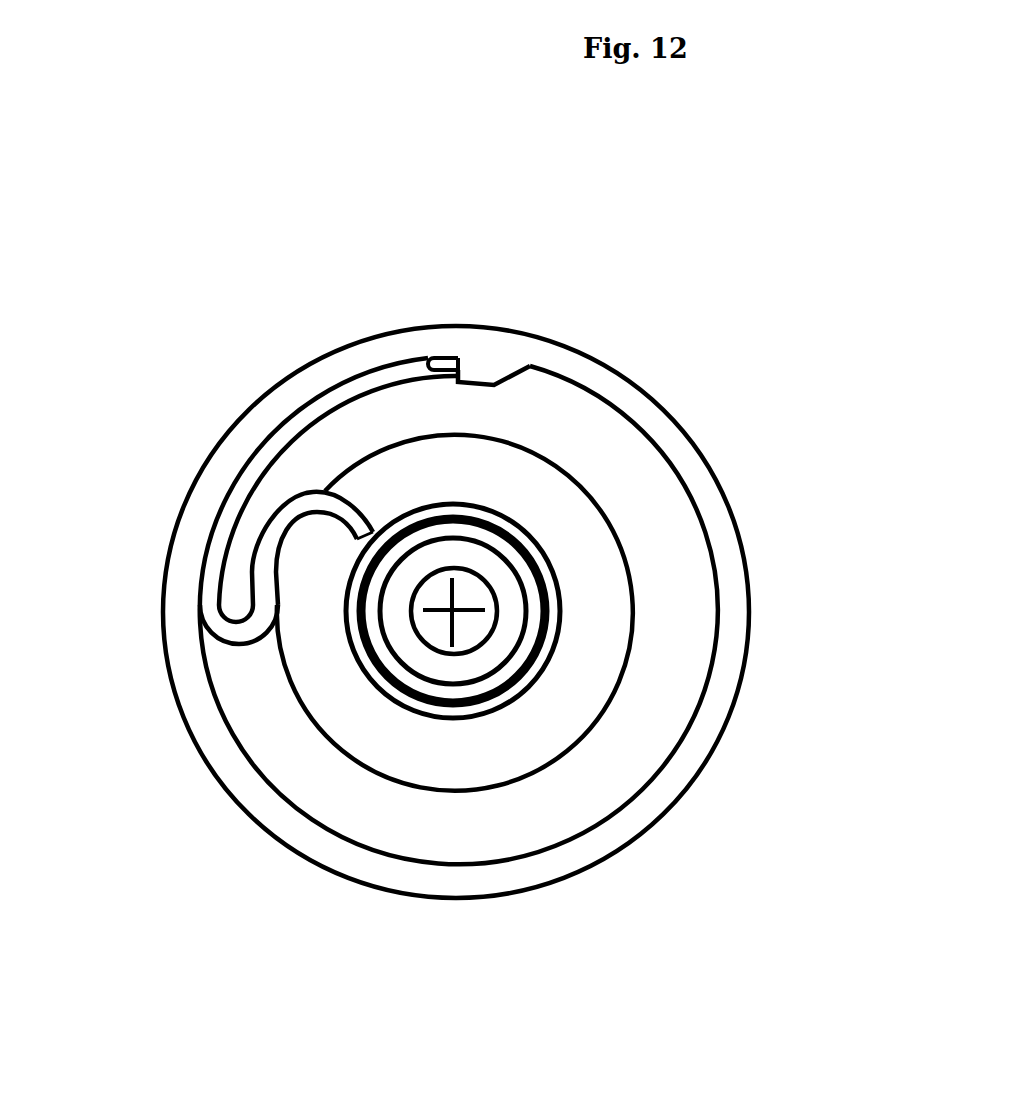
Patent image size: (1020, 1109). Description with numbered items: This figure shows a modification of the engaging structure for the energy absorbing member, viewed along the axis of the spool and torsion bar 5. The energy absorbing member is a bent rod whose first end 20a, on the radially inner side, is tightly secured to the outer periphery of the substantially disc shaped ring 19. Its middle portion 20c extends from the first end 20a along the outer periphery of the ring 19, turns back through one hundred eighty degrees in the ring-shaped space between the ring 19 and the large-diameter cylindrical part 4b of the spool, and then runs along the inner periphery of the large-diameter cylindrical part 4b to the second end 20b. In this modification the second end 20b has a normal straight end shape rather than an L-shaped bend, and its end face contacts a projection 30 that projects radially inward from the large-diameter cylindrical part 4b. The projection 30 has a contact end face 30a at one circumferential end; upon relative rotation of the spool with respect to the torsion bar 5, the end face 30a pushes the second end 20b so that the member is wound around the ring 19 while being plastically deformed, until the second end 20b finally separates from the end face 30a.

The large-diameter cylindrical part 4b is at (703, 475).
The torsion bar 5 is at (420, 627).
The ring 19 is at (583, 630).
The first end 20a is at (344, 526).
The second end 20b is at (458, 368).
The middle portion 20c is at (223, 495).
The projection 30 is at (478, 412).
The contact end face 30a is at (430, 358).